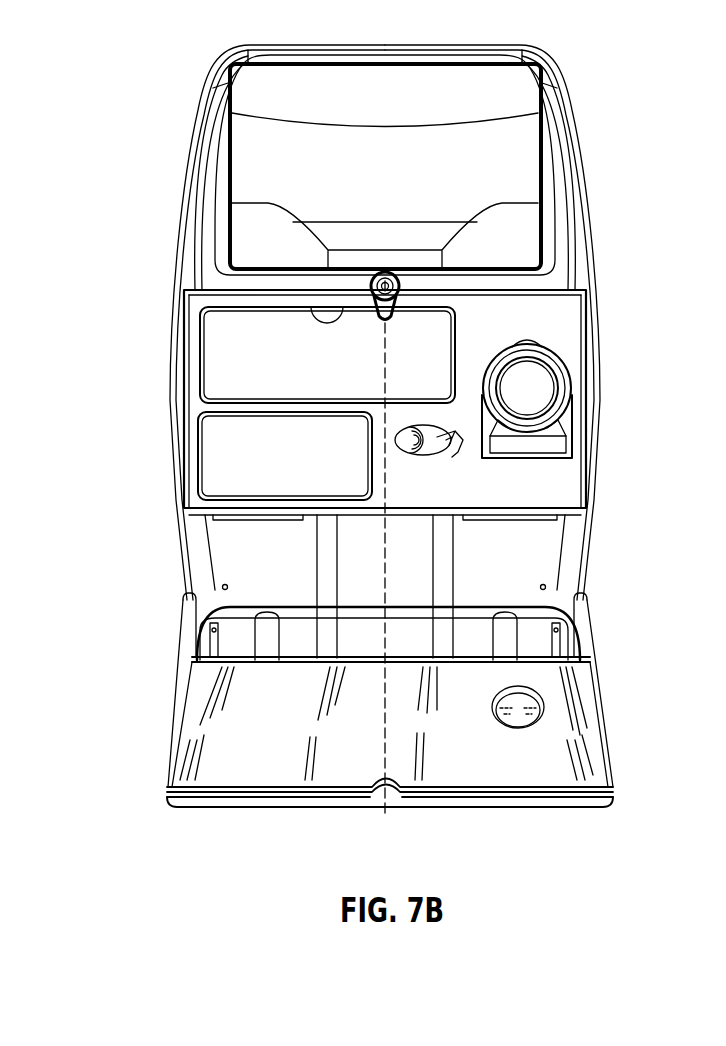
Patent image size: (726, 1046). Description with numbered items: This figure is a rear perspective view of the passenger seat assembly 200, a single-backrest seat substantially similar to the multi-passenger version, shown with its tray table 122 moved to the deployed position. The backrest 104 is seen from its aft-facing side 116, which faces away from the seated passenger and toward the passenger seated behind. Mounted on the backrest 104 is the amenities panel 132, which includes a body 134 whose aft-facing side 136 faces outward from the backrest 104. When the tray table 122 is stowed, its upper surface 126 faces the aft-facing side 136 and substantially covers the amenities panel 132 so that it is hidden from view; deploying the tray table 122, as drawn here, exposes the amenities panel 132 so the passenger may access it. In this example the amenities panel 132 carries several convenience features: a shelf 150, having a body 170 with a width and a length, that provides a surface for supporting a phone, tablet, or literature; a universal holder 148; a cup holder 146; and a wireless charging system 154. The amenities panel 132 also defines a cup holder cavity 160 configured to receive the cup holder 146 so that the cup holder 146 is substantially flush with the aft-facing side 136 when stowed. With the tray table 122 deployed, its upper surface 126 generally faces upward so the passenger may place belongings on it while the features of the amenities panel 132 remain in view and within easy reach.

The passenger seat assembly 200 is at (164, 31).
The backrest 104 is at (208, 117).
The aft-facing side 116 is at (572, 180).
The amenities panel 132 is at (563, 307).
The body 134 is at (573, 358).
The cup holder 146 is at (563, 407).
The aft-facing side 136 is at (563, 478).
The shelf 150 is at (203, 318).
The body 170 is at (200, 338).
The universal holder 148 is at (200, 428).
The cup holder cavity 160 is at (527, 343).
The wireless charging system 154 is at (413, 452).
The upper surface 126 is at (607, 748).
The tray table 122 is at (531, 798).